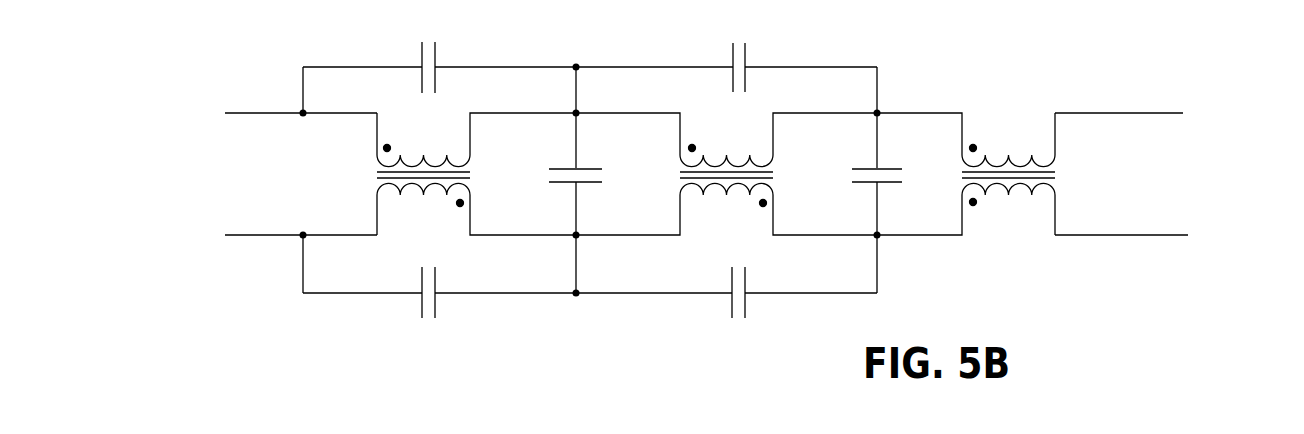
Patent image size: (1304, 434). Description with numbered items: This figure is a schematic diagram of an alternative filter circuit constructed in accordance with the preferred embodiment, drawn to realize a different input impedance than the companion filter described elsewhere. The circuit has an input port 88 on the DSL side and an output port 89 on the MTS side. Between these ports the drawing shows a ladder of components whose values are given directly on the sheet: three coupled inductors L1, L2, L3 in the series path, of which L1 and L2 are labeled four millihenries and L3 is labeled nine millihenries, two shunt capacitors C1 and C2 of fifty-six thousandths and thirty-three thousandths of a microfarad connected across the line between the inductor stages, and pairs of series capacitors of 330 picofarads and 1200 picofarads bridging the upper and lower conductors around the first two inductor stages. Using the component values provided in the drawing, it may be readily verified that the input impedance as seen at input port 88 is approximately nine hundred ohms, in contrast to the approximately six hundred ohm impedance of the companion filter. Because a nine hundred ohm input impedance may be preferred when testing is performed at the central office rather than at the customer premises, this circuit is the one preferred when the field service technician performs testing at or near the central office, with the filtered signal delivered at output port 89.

The input port 88 is at (215, 209).
The output port 89 is at (1197, 203).
The first transformer (4 mH) L1 is at (423, 169).
The second transformer (4 mH) L2 is at (726, 169).
The third transformer (9 mH) L3 is at (1008, 172).
The first shunt capacitor (0.056 uF) C1 is at (607, 177).
The second shunt capacitor (0.033 uF) C2 is at (905, 175).
The 330 pF series capacitors 330 is at (427, 178).
The 1200 pF series capacitors 1200 is at (736, 181).